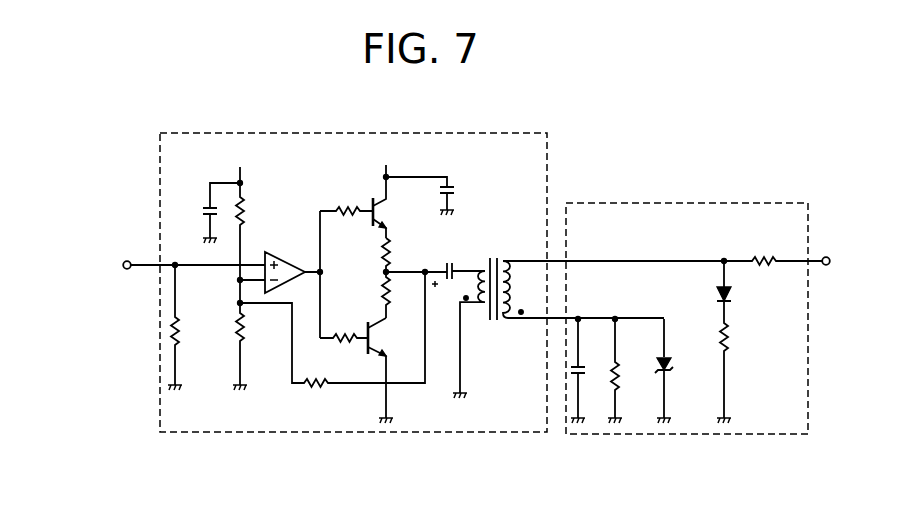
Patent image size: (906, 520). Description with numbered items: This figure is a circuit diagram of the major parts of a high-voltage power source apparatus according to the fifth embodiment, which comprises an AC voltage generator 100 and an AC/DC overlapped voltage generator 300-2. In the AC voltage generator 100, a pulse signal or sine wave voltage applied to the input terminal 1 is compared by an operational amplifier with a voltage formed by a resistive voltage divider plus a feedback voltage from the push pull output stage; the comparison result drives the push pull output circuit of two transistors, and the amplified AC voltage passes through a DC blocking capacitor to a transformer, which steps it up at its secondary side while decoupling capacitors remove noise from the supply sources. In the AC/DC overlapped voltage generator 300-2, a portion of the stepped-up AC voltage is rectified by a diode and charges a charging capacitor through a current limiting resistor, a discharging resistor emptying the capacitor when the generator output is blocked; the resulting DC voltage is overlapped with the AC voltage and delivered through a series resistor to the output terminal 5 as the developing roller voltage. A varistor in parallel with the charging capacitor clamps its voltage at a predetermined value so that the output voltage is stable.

The input terminal 1 is at (127, 258).
The output terminal 5 is at (826, 256).
The AC voltage generator 100 is at (548, 147).
The AC/DC overlapped voltage generator 300-2 is at (704, 202).